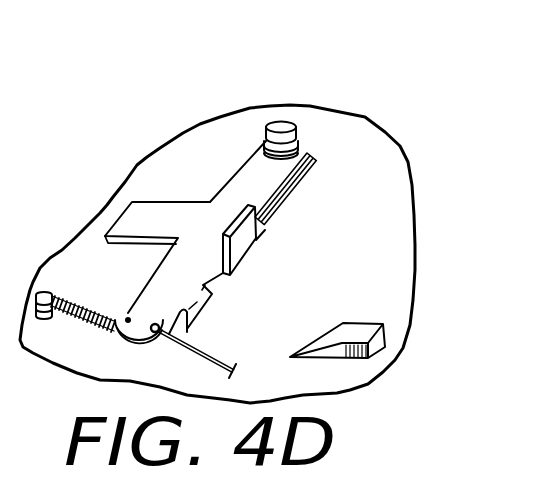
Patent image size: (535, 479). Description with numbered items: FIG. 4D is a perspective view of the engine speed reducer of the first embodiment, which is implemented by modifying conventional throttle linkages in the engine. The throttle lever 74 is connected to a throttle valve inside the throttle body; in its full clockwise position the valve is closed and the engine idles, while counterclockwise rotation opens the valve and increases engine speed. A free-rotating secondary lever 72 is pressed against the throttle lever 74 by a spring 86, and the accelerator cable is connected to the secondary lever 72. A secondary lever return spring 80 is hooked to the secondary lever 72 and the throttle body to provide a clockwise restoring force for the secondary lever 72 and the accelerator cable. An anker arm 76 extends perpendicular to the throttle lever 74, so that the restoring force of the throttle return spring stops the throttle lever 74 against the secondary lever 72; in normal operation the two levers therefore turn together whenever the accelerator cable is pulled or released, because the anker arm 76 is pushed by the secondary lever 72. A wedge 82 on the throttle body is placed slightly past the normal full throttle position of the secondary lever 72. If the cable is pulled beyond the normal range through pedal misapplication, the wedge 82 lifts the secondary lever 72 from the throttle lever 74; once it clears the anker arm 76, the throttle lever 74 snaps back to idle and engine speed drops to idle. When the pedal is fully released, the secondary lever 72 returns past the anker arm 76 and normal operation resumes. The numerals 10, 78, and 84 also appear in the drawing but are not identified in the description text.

The mounting surface 10 is at (287, 303).
The secondary lever 72 is at (170, 213).
The throttle lever 74 is at (308, 170).
The anker arm 76 is at (240, 235).
The link rod 78 is at (212, 355).
The secondary lever return spring 80 is at (80, 299).
The wedge 82 is at (360, 328).
The knob 84 is at (288, 130).
The spring 86 is at (304, 152).